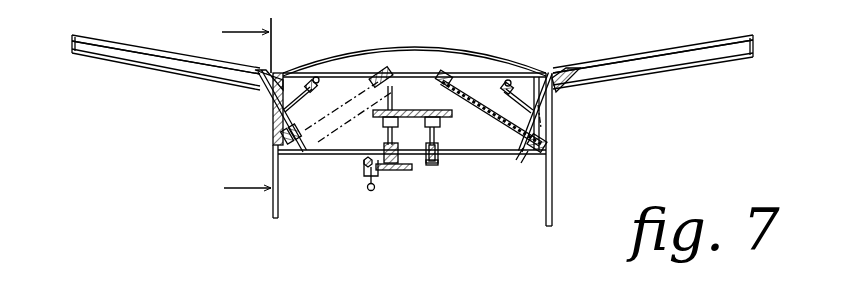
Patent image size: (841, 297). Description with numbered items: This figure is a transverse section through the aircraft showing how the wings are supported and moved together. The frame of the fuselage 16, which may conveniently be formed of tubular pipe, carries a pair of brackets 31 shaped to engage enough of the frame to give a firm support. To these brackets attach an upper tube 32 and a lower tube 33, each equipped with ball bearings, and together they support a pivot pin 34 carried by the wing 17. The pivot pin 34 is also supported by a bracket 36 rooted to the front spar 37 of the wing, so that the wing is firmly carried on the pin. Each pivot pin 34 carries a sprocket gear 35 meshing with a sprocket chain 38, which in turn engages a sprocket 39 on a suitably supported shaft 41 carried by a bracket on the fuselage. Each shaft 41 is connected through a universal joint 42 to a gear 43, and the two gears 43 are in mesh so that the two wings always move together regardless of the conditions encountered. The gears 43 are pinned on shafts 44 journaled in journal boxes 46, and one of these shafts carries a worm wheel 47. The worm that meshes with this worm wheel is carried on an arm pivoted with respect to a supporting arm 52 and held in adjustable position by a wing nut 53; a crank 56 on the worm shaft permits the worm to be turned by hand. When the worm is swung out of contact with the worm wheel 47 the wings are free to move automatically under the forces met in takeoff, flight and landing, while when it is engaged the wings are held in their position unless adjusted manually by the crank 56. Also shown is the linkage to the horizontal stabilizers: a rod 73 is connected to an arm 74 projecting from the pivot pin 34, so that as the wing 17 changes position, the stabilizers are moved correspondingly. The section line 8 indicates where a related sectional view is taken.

The section line 8- 8 is at (238, 107).
The fuselage 16 is at (470, 44).
The wing 17 is at (70, 53).
The brackets 31 is at (545, 100).
The upper tube 32 is at (276, 122).
The lower tube 33 is at (304, 155).
The pivot pin 34 is at (268, 100).
The sprocket gear 35 is at (312, 140).
The bracket 36 is at (268, 72).
The front spar 37 is at (213, 86).
The sprocket chain 38 is at (500, 128).
The sprocket 39 is at (393, 62).
The shaft 41 is at (384, 72).
The universal joint 42 is at (408, 102).
The gear 43 is at (440, 120).
The shafts 44 is at (386, 134).
The journal boxes 46 is at (438, 162).
The worm wheel 47 is at (400, 170).
The supporting arm 52 is at (363, 178).
The wing nut 53 is at (362, 162).
The crank 56 is at (374, 190).
The rod 73 is at (504, 82).
The arm 74 is at (318, 92).